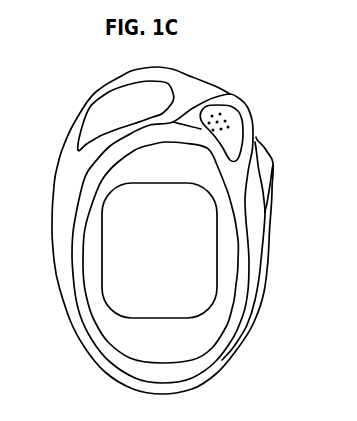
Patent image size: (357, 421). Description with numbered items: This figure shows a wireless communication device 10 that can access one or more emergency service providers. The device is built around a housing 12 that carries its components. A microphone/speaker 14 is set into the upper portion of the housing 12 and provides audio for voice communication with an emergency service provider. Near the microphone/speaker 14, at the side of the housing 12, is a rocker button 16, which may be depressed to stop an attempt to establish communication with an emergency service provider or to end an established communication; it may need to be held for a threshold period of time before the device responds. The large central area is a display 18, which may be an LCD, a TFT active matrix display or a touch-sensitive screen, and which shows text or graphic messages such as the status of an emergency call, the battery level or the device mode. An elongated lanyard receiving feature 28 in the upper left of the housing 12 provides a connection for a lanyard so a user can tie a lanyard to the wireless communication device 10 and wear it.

The wireless communication device 10 is at (263, 58).
The housing 12 is at (182, 70).
The microphone/speaker 14 is at (226, 118).
The rocker button 16 is at (275, 165).
The display 18 is at (198, 297).
The lanyard receiving feature 28 is at (100, 94).